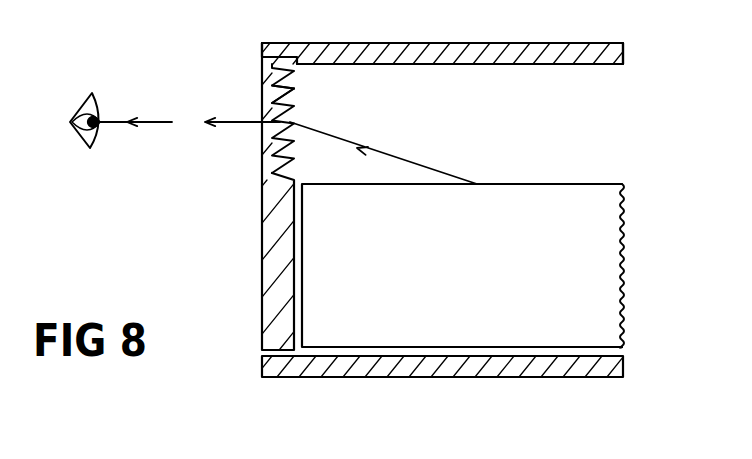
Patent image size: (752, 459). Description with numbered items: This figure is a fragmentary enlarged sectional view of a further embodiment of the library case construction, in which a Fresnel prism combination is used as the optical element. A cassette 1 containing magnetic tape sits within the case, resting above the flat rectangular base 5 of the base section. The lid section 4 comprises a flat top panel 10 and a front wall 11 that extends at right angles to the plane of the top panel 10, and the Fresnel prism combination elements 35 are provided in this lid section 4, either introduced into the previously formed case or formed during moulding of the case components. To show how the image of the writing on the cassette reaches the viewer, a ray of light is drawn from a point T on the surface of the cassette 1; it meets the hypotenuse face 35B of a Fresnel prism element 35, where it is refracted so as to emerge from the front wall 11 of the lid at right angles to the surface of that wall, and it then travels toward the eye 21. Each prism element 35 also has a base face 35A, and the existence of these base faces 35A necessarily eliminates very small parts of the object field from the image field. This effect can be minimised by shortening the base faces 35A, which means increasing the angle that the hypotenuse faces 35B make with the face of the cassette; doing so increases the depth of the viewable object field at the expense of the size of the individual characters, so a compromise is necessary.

The cassette 1 is at (463, 266).
The lid section 4 is at (365, 34).
The base 5 is at (508, 386).
The top panel 10 is at (512, 38).
The front wall 11 is at (251, 273).
The eye 21 is at (98, 161).
The Fresnel prism element 35 is at (282, 78).
The base face 35A is at (289, 88).
The hypotenuse face 35B is at (288, 80).
The point on the surface of the cassette T is at (392, 156).